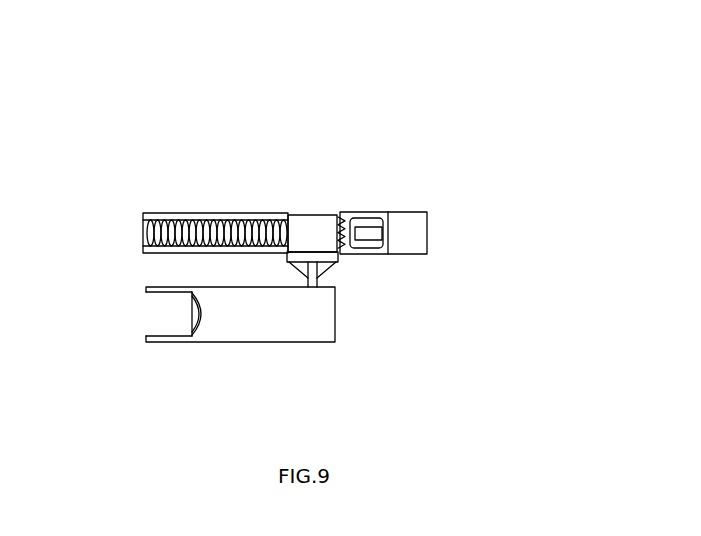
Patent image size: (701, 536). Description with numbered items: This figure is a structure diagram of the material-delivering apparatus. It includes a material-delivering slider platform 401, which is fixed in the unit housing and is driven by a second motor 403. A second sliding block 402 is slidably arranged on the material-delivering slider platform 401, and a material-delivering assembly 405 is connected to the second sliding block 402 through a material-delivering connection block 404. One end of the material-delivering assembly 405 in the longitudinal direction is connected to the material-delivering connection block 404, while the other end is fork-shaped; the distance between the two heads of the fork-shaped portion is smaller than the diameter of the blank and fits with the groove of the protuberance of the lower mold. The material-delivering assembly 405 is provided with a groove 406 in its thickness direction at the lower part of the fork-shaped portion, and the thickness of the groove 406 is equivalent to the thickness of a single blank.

The material-delivering slider platform 401 is at (337, 134).
The second sliding block 402 is at (409, 164).
The second motor 403 is at (434, 202).
The material-delivering connection block 404 is at (409, 314).
The material-delivering assembly 405 is at (338, 364).
The groove 406 is at (118, 251).